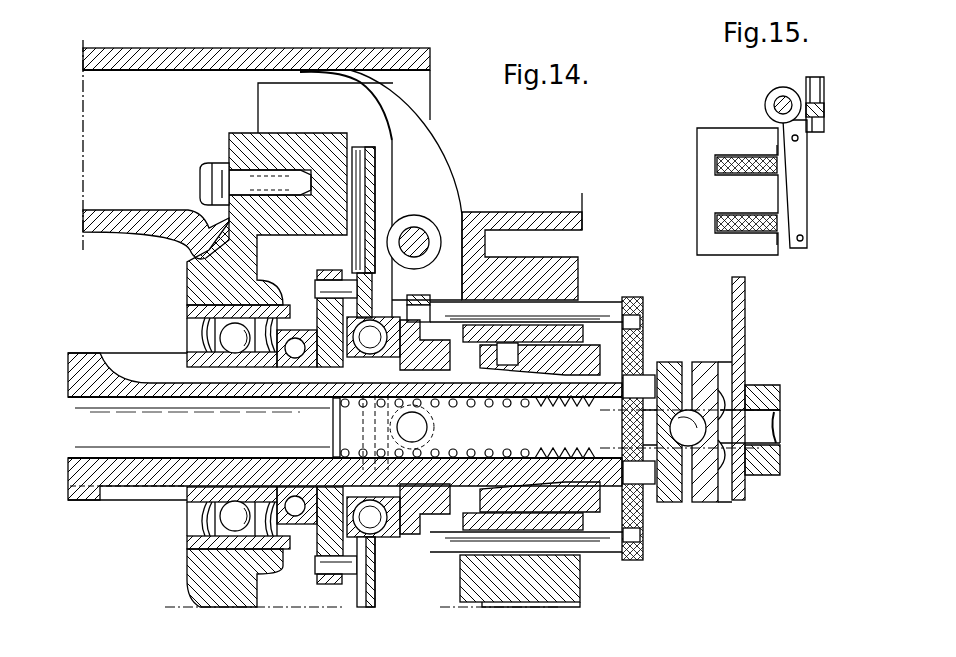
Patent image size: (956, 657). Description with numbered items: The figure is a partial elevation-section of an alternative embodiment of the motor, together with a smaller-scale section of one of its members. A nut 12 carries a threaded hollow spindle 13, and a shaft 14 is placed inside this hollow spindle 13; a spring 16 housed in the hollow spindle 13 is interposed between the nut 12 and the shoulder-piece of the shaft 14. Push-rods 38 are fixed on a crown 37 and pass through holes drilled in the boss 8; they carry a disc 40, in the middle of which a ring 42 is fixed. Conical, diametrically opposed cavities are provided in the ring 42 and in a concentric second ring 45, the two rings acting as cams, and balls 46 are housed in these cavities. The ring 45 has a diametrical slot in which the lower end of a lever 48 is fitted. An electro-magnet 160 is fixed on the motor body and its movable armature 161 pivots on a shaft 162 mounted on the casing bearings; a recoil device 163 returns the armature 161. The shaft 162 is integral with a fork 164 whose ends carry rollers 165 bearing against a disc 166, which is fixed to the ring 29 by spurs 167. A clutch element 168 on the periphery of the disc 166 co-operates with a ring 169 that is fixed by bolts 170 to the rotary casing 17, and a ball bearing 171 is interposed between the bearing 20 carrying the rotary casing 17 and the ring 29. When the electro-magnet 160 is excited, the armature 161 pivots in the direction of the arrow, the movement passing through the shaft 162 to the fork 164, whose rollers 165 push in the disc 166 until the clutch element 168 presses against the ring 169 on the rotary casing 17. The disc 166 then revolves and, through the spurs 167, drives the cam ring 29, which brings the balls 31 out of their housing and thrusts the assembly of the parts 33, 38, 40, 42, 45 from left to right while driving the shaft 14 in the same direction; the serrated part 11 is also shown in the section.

In FIG. 14, the boss 8 is at (476, 232).
In FIG. 14, the serrated sleeve 11 is at (552, 406).
In FIG. 14, the nut 12 is at (580, 405).
In FIG. 14, the hollow spindle 13 is at (250, 388).
In FIG. 14, the shaft 14 is at (770, 363).
In FIG. 14, the spring 16 is at (365, 410).
In FIG. 14, the rotary casing 17 is at (142, 216).
In FIG. 14, the bearing 20 is at (190, 302).
In FIG. 14, the ring (cam) 29 is at (312, 312).
In FIG. 14, the balls 31 is at (385, 555).
In FIG. 14, the part of thrust assembly 33 is at (407, 540).
In FIG. 14, the crown 37 is at (422, 300).
In FIG. 14, the push-rods 38 is at (590, 300).
In FIG. 14, the disc 40 is at (640, 298).
In FIG. 14, the ring 42 is at (676, 503).
In FIG. 14, the second ring 45 is at (715, 503).
In FIG. 14, the balls 46 is at (682, 412).
In FIG. 14, the lever 48 is at (742, 340).
In FIG. 15, the electro-magnet 160 is at (731, 148).
In FIG. 15, the movable armature 161 is at (806, 168).
In FIG. 14, the shaft 162 is at (428, 228).
In FIG. 15, the shaft 162 is at (773, 104).
In FIG. 15, the recoil device 163 is at (825, 92).
In FIG. 14, the fork 164 is at (406, 215).
In FIG. 14, the rollers 165 is at (435, 428).
In FIG. 14, the disc 166 is at (380, 150).
In FIG. 14, the spurs 167 is at (332, 286).
In FIG. 14, the clutch element 168 is at (353, 142).
In FIG. 14, the ring 169 is at (262, 128).
In FIG. 14, the bolts 170 is at (200, 182).
In FIG. 14, the ball bearing 171 is at (266, 305).